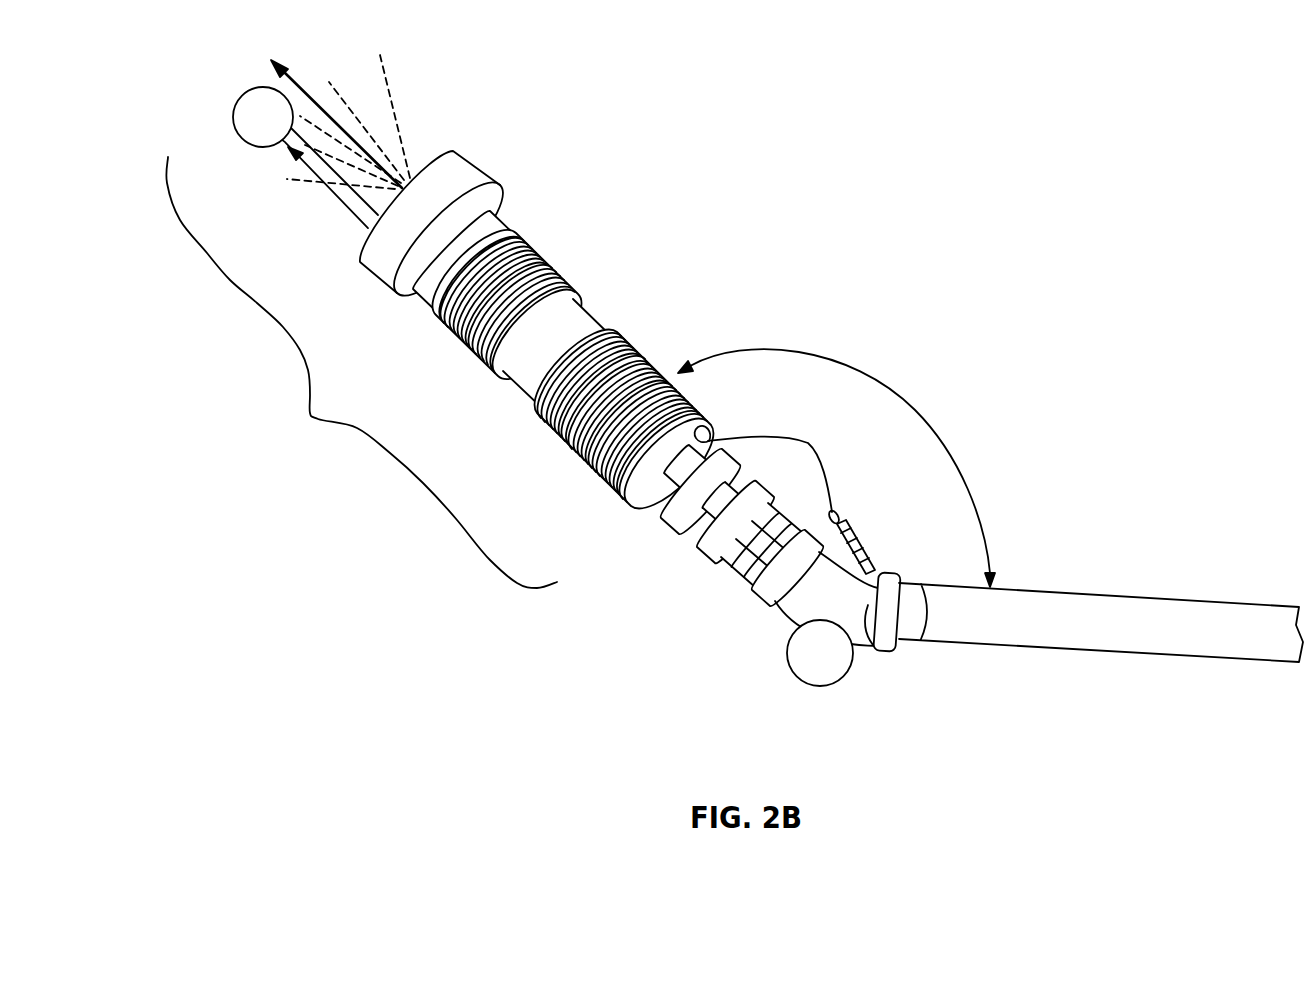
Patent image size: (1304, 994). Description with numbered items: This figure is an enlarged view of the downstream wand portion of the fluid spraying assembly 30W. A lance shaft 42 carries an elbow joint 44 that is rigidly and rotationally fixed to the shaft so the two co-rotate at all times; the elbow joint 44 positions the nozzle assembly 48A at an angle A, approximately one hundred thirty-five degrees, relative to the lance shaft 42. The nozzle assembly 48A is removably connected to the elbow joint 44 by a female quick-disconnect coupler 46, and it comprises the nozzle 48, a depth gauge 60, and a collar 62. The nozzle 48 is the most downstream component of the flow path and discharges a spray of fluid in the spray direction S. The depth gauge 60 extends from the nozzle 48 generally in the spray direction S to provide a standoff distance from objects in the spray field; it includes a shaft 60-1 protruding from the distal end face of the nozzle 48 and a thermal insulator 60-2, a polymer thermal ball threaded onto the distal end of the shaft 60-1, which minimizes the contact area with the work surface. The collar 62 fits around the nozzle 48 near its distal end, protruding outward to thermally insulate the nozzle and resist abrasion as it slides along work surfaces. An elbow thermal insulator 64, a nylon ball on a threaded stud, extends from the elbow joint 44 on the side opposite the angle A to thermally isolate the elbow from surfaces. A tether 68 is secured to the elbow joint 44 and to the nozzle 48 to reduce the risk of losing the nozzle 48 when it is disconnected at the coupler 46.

The fluid spraying assembly 30W is at (1052, 153).
The collar 62 is at (471, 166).
The nozzle 48 is at (532, 246).
The nozzle assembly 48A is at (361, 372).
The coupler 46 is at (718, 522).
The elbow joint 44 is at (885, 651).
The lance shaft 42 is at (1218, 615).
The elbow thermal insulator 64 is at (810, 684).
The tether 68 is at (815, 460).
The depth gauge 60 is at (299, 156).
The shaft 60-1 is at (350, 220).
The thermal insulator 60-2 is at (233, 125).
The spray direction S is at (290, 70).
The angle A is at (930, 420).